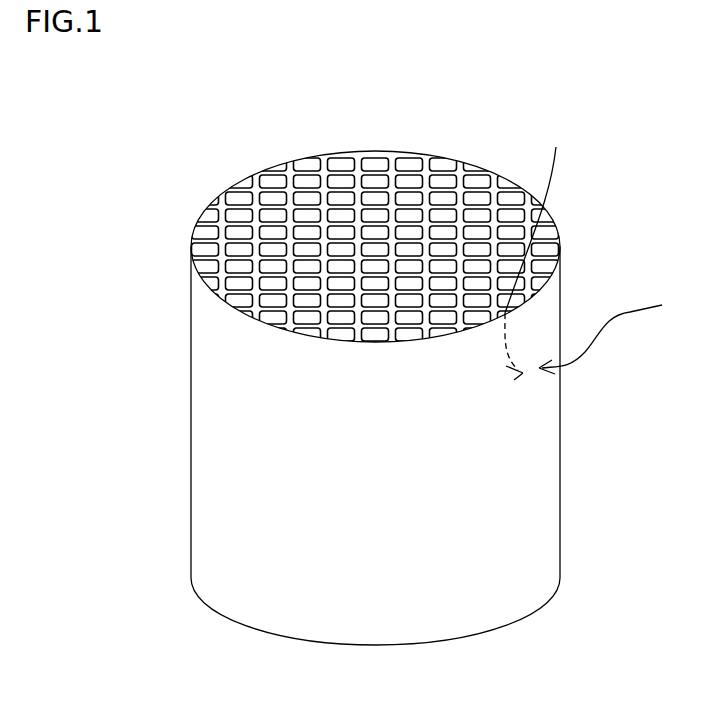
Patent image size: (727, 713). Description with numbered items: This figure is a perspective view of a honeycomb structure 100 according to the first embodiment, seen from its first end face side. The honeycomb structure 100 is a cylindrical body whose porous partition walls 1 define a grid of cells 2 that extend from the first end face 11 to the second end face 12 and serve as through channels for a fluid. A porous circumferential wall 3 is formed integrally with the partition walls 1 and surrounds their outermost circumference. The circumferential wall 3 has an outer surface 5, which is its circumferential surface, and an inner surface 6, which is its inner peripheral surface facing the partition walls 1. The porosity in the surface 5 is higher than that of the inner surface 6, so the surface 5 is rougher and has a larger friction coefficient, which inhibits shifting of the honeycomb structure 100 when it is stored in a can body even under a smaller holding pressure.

The honeycomb structure 100 is at (583, 54).
The partition walls 1 is at (359, 165).
The cells 2 is at (412, 183).
The circumferential wall 3 is at (561, 313).
The surface of the circumferential wall 5 is at (610, 333).
The inner surface of the circumferential wall 6 is at (534, 251).
The first end face 11 is at (225, 193).
The second end face 12 is at (537, 607).